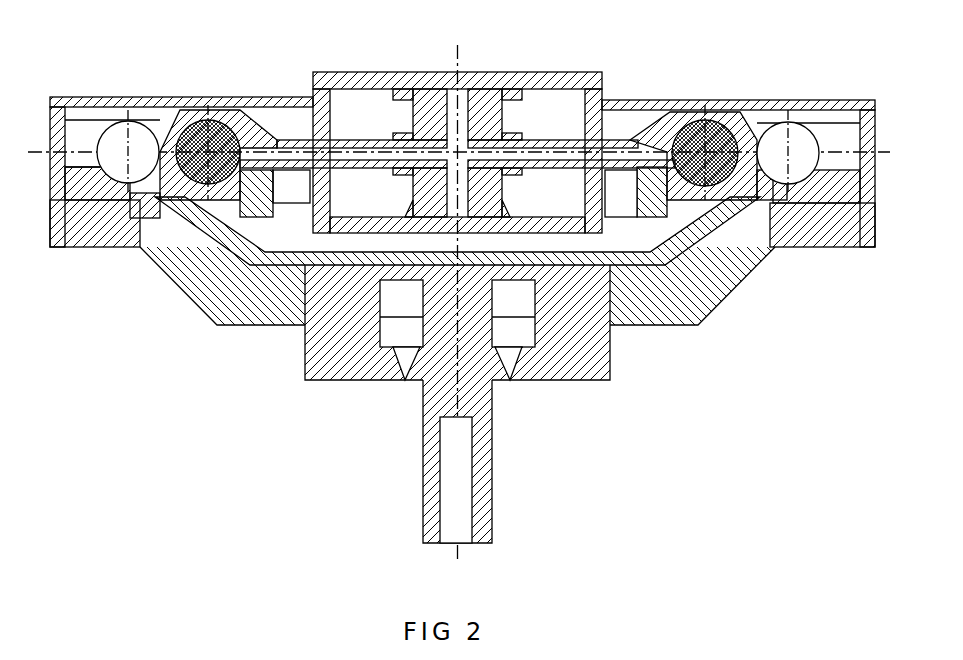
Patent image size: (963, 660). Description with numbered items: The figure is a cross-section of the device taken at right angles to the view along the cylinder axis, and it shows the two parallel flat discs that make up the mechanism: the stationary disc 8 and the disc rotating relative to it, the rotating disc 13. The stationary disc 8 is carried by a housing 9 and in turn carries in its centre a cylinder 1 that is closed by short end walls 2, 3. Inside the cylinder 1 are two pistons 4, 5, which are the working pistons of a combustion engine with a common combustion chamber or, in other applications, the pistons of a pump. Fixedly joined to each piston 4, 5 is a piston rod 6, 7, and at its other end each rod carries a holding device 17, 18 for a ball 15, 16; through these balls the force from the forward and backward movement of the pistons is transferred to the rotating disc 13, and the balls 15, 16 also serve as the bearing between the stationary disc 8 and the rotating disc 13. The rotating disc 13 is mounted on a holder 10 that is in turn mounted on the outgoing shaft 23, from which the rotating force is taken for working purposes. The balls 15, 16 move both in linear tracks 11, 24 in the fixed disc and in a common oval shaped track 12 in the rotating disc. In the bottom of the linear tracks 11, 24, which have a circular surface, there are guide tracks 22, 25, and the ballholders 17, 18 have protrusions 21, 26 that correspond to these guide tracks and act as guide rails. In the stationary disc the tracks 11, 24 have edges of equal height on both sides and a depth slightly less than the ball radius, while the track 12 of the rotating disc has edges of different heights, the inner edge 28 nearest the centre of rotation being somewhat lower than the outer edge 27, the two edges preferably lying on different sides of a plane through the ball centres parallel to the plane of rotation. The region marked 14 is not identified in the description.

The cylinder 1 is at (545, 72).
The end wall 2 is at (574, 80).
The end wall 3 is at (311, 90).
The piston 4 is at (502, 103).
The piston 5 is at (408, 102).
The piston rod 6 is at (548, 168).
The piston rod 7 is at (362, 170).
The stationary disc 8 is at (737, 112).
The housing 9 is at (662, 317).
The holder 10 is at (690, 245).
The linear track 11 is at (82, 142).
The oval shaped track 12 is at (240, 210).
The rotating disc 13 is at (657, 187).
The pocket 14 is at (307, 201).
The ball 15 is at (215, 110).
The ball 16 is at (745, 120).
The holding device 17 is at (177, 97).
The holding device 18 is at (660, 143).
The protrusion 21 is at (240, 110).
The guide track 22 is at (128, 115).
The outgoing shaft 23 is at (487, 462).
The linear track 24 is at (843, 143).
The guide track 25 is at (822, 115).
The protrusion 26 is at (700, 117).
The outer edge 27 is at (158, 185).
The inner edge 28 is at (665, 195).